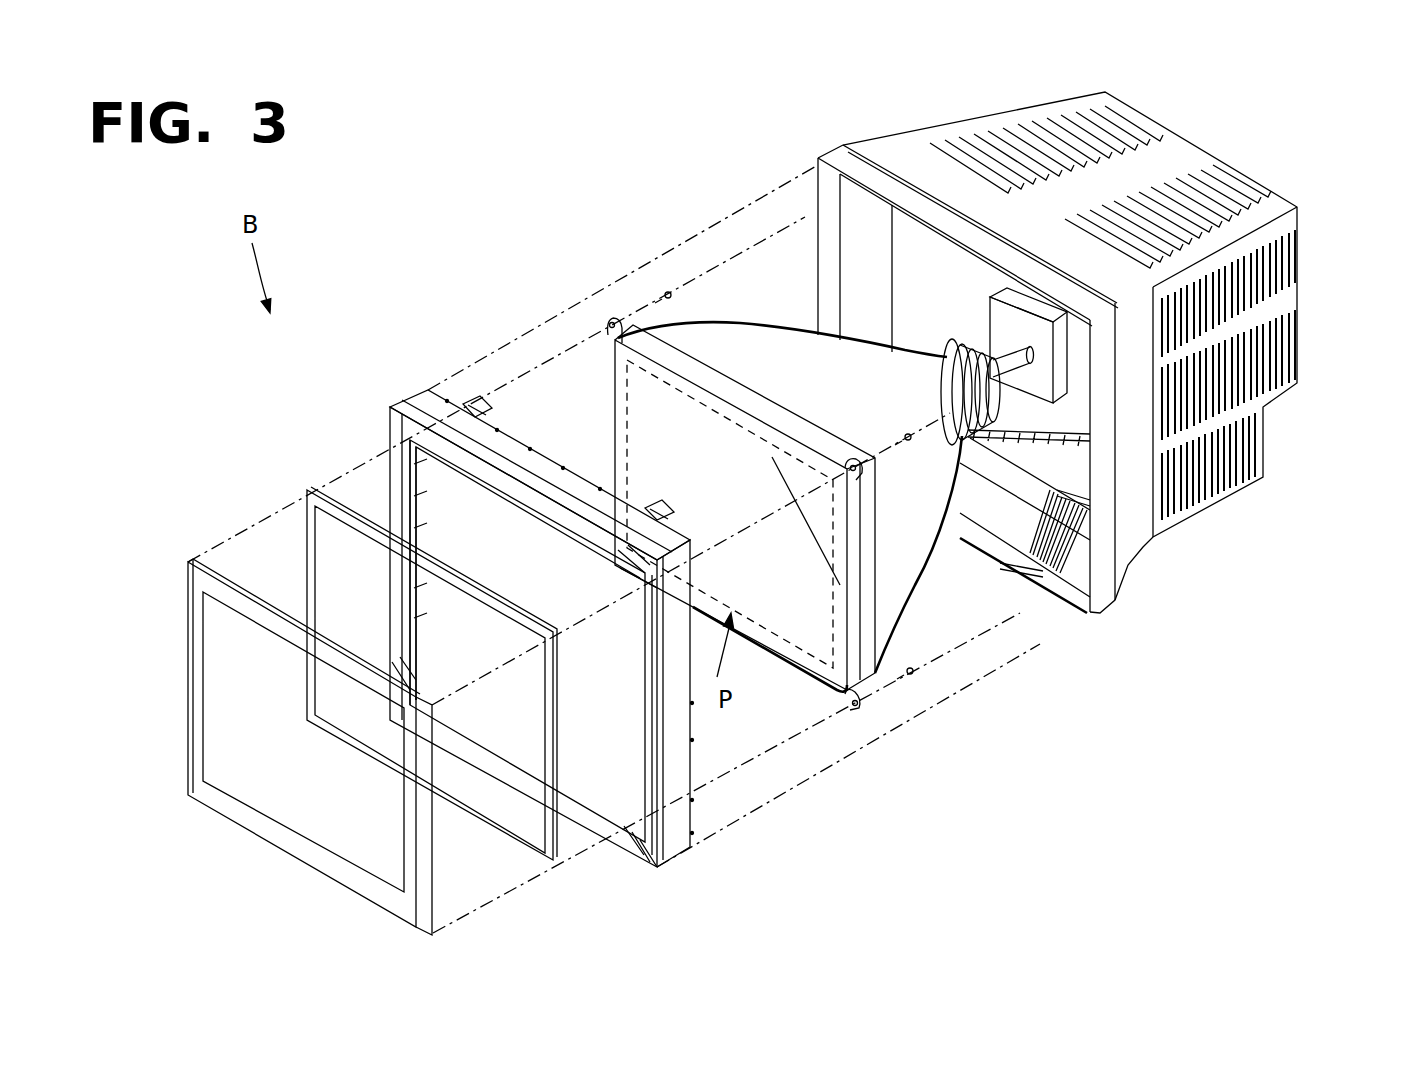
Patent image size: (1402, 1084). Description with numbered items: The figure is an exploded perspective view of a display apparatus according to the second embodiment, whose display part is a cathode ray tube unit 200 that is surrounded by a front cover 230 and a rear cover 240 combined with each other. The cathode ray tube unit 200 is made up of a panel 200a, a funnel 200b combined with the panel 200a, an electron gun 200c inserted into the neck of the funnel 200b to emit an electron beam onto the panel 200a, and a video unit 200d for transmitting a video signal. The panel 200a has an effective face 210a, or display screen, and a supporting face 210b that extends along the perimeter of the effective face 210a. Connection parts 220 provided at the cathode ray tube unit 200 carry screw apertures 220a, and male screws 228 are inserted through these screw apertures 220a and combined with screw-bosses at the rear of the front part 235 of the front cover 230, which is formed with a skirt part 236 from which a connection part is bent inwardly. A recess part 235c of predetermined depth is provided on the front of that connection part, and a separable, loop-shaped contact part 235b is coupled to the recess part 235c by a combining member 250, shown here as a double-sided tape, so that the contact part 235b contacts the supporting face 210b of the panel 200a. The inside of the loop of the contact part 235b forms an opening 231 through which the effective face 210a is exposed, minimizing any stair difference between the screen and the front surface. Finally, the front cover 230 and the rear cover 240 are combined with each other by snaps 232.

The cathode ray tube unit 200 is at (737, 300).
The panel 200a is at (755, 624).
The funnel 200b is at (940, 650).
The electron gun 200c is at (975, 338).
The video unit 200d is at (990, 298).
The effective face 210a is at (772, 455).
The supporting face 210b is at (810, 670).
The connection part 220 is at (612, 325).
The screw aperture 220a is at (610, 321).
The male screw 228 is at (665, 290).
The front cover 230 is at (292, 390).
The opening 231 is at (247, 615).
The snap 232 is at (472, 401).
The front part 235 is at (390, 456).
The contact part 235b is at (240, 725).
The recess part 235c is at (412, 505).
The skirt part 236 is at (392, 407).
The rear cover 240 is at (1298, 313).
The combining member 250 is at (307, 504).